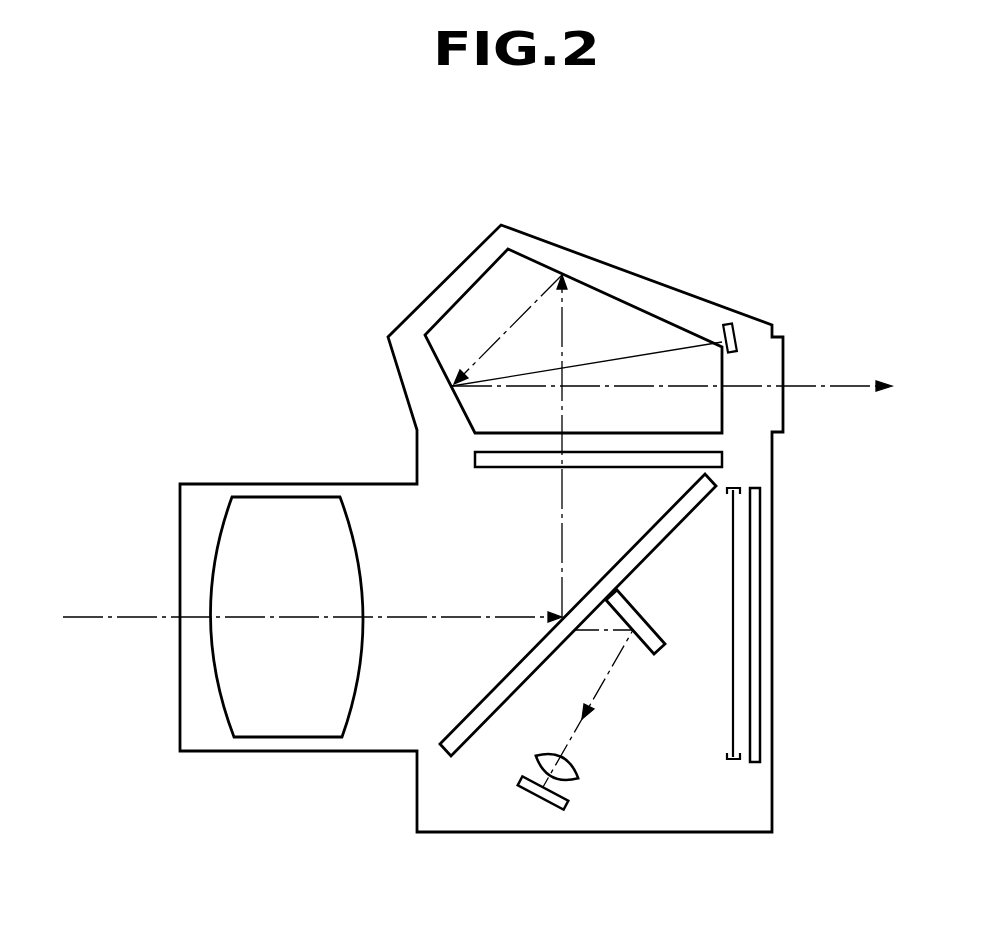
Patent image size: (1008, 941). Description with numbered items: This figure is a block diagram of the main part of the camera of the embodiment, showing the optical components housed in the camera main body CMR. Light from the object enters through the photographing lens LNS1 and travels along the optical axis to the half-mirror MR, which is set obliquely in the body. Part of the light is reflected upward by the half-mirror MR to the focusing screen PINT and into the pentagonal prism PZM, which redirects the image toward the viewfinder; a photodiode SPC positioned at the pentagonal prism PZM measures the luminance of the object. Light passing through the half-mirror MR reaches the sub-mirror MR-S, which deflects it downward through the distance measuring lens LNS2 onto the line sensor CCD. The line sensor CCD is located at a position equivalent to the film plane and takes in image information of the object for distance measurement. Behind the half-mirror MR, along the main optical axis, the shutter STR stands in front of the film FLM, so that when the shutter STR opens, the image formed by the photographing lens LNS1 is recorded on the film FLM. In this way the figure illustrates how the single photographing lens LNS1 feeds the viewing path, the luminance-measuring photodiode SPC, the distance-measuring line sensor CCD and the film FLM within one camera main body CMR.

The camera main body CMR is at (438, 288).
The pentagonal prism PZM is at (605, 307).
The photodiode SPC is at (733, 322).
The focusing screen PINT is at (722, 460).
The shutter STR is at (735, 532).
The film FLM is at (760, 679).
The half-mirror MR is at (475, 708).
The sub-mirror MR-S is at (658, 650).
The photographing lens LNS1 is at (293, 737).
The distance measuring lens LNS2 is at (578, 772).
The line sensor CCD is at (552, 807).